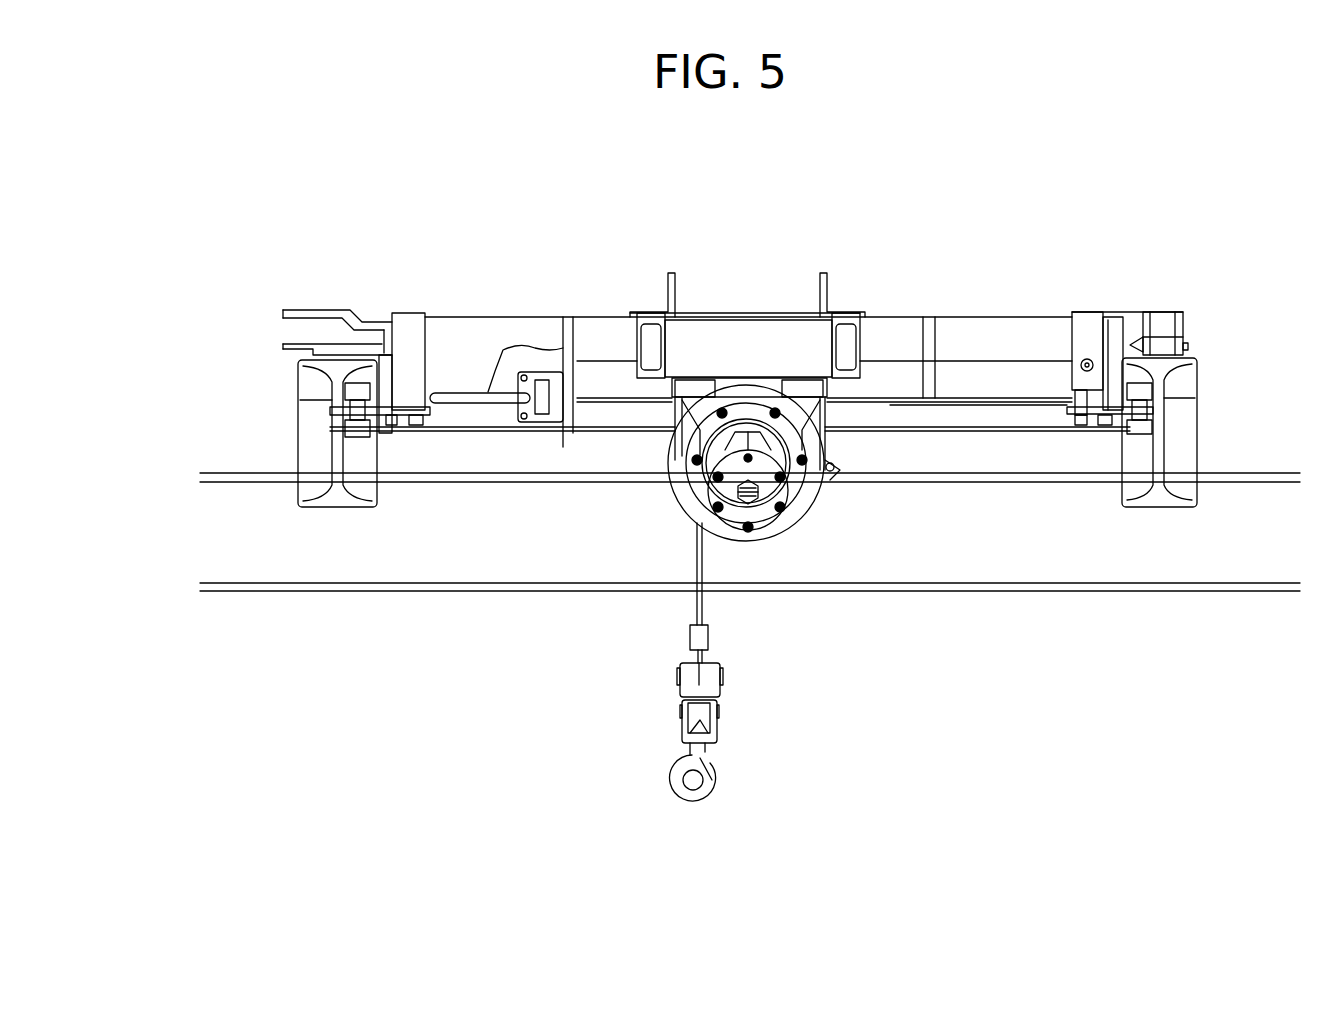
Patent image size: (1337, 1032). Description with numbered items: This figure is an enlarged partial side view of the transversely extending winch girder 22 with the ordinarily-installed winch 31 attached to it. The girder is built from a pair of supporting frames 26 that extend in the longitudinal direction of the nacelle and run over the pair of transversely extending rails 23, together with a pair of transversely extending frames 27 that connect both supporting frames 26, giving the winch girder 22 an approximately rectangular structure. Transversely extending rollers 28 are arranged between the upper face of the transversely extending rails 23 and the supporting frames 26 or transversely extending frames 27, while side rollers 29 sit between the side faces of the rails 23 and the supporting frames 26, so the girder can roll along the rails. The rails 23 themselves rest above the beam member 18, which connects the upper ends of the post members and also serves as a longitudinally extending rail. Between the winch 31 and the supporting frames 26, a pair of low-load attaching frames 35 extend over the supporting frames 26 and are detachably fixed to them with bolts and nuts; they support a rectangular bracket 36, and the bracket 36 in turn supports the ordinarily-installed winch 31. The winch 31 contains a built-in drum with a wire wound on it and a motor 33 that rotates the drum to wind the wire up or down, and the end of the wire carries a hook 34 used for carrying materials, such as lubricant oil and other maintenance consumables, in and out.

The beam member 18 is at (1042, 572).
The transversely extending winch girder 22 is at (474, 302).
The transversely extending rail 23 is at (333, 503).
The supporting frame 26 is at (966, 318).
The transversely extending frame 27 is at (1113, 296).
The transversely extending roller 28 is at (1157, 326).
The side roller 29 is at (343, 422).
The ordinarily-installed winch 31 is at (756, 565).
The motor 33 is at (780, 495).
The hook 34 is at (693, 803).
The low-load attaching frame 35 is at (645, 306).
The bracket 36 is at (741, 320).